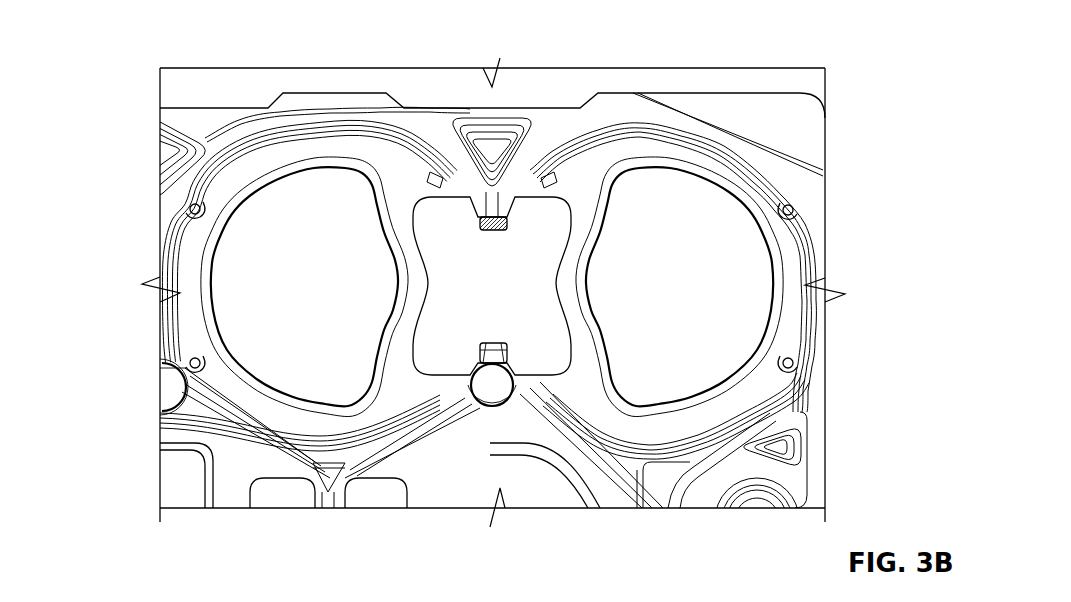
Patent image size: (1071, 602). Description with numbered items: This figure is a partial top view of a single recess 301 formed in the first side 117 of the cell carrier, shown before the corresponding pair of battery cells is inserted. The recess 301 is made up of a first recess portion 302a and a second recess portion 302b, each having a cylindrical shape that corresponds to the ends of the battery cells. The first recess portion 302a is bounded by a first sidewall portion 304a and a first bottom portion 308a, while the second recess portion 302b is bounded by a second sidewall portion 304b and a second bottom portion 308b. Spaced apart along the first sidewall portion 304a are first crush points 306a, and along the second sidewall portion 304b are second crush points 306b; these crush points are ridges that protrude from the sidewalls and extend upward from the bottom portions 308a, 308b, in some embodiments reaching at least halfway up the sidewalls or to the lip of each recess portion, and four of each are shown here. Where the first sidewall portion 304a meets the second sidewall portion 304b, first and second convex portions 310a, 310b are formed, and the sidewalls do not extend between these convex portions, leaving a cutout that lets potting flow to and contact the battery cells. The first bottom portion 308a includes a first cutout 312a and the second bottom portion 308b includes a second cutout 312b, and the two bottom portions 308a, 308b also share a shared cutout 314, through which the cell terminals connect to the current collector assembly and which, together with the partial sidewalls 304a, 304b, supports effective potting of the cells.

The first side 117 is at (820, 116).
The recess 301 is at (519, 84).
The first recess portion 302a is at (247, 105).
The second recess portion 302b is at (685, 96).
The first sidewall portion 304a is at (327, 117).
The second sidewall portion 304b is at (796, 212).
The first crush points 306a is at (440, 170).
The second crush points 306b is at (587, 177).
The first bottom portion 308a is at (270, 412).
The second bottom portion 308b is at (728, 167).
The first convex portion 310a is at (519, 218).
The second convex portion 310b is at (518, 359).
The first cutout 312a is at (235, 247).
The second cutout 312b is at (750, 277).
The shared cutout 314 is at (437, 353).